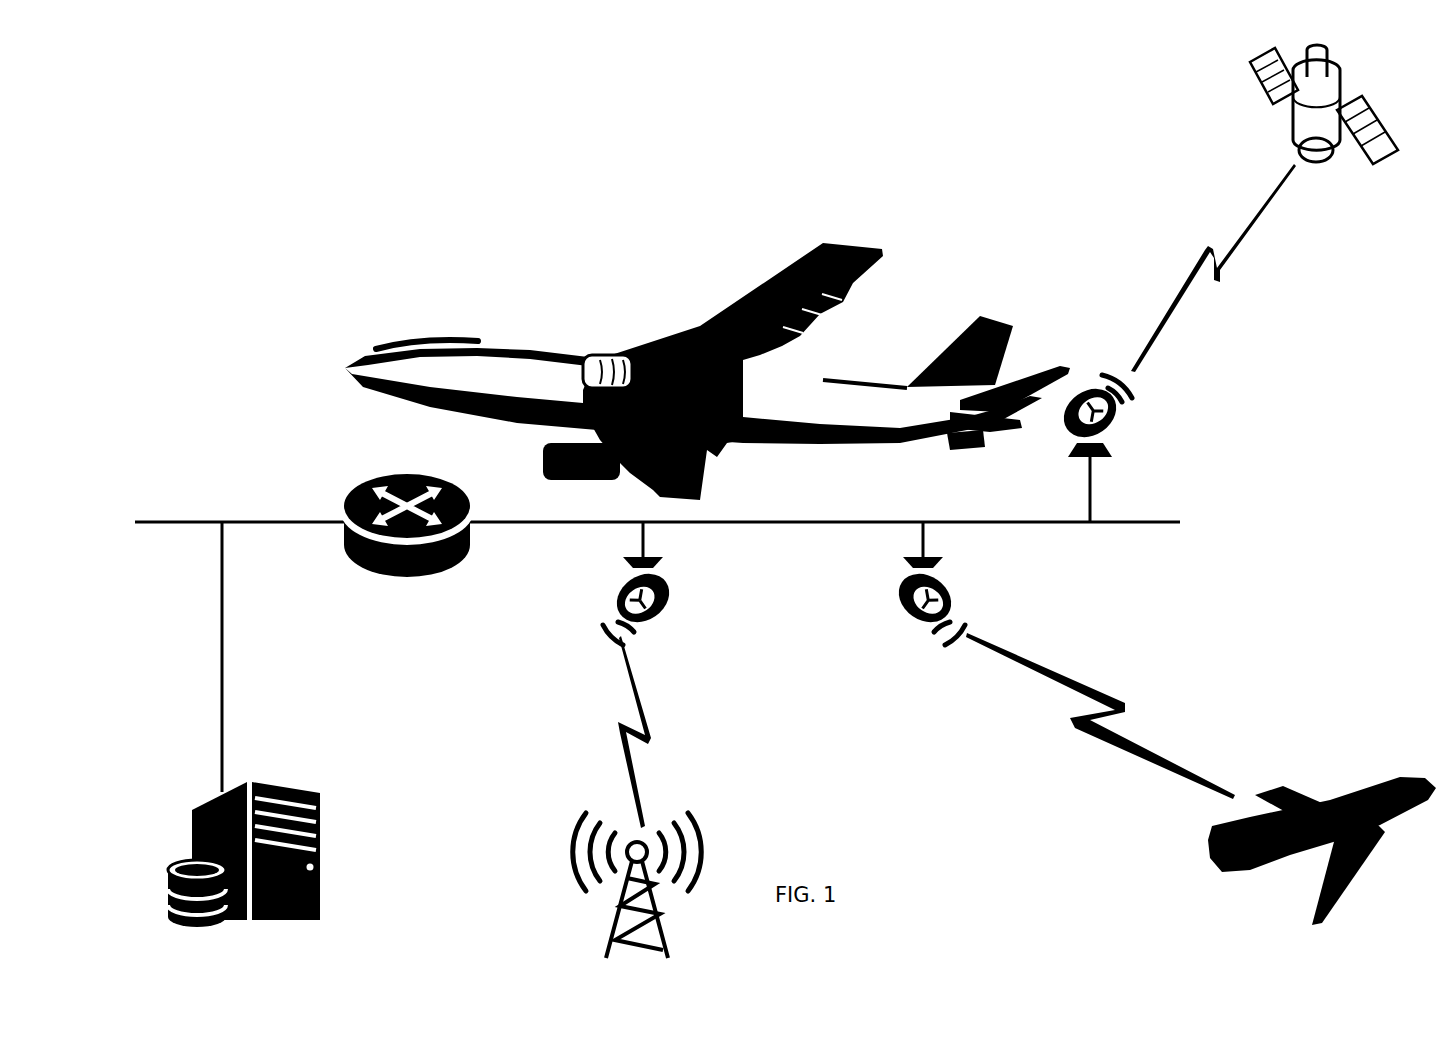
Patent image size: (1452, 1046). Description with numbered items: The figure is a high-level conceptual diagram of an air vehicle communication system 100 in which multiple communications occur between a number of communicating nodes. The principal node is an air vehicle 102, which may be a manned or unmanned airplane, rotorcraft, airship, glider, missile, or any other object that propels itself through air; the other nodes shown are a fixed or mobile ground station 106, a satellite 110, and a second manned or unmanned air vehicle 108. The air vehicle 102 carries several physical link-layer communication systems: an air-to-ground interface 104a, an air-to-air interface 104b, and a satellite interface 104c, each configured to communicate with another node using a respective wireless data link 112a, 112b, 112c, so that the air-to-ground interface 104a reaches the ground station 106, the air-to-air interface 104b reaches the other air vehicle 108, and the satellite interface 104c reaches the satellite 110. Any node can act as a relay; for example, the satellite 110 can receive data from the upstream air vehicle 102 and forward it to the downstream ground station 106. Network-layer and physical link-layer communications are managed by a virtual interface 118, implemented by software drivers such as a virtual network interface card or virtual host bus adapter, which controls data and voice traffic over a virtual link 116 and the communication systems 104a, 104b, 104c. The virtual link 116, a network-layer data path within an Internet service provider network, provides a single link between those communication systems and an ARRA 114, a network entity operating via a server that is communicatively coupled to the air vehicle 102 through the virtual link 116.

The air vehicle communication system 100 is at (268, 92).
The air vehicle 102 is at (436, 340).
The air-to-ground interface 104a is at (664, 622).
The air-to-air interface 104b is at (908, 620).
The satellite interface 104c is at (1101, 456).
The ground station 106 is at (613, 927).
The air vehicle 108 is at (1222, 862).
The satellite 110 is at (1250, 72).
The wireless data link 112a is at (642, 744).
The wireless data link 112b is at (1098, 738).
The wireless data link 112c is at (1222, 282).
The ARRA 114 is at (192, 816).
The virtual link 116 is at (801, 526).
The virtual interface 118 is at (384, 476).